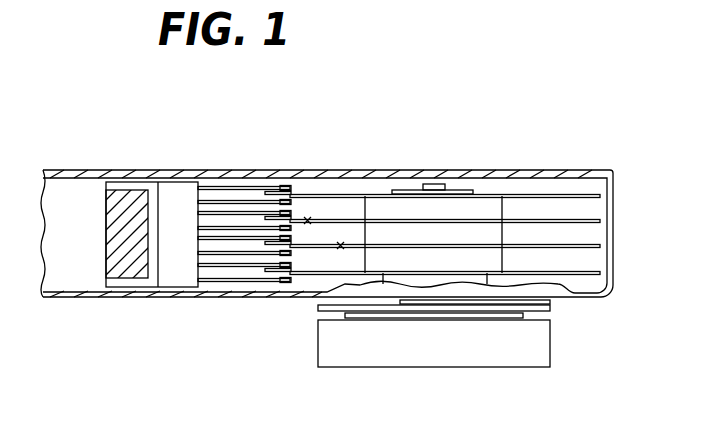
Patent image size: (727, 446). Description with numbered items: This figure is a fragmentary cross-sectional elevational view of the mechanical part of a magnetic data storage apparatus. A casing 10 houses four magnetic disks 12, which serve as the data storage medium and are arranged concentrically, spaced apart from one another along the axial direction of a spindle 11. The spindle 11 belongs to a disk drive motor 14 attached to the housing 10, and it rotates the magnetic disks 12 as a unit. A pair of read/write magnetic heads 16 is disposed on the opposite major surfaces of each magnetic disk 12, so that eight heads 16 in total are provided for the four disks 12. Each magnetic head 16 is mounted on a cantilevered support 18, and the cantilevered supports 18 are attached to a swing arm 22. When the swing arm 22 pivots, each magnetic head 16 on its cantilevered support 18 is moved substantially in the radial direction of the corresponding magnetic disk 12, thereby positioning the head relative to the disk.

The casing 10 is at (252, 298).
The spindle 11 is at (430, 184).
The magnetic disk 12 is at (525, 193).
The disk drive motor 14 is at (328, 357).
The read/write magnetic head 16 is at (289, 188).
The cantilevered support 18 is at (208, 202).
The swing arm 22 is at (110, 210).